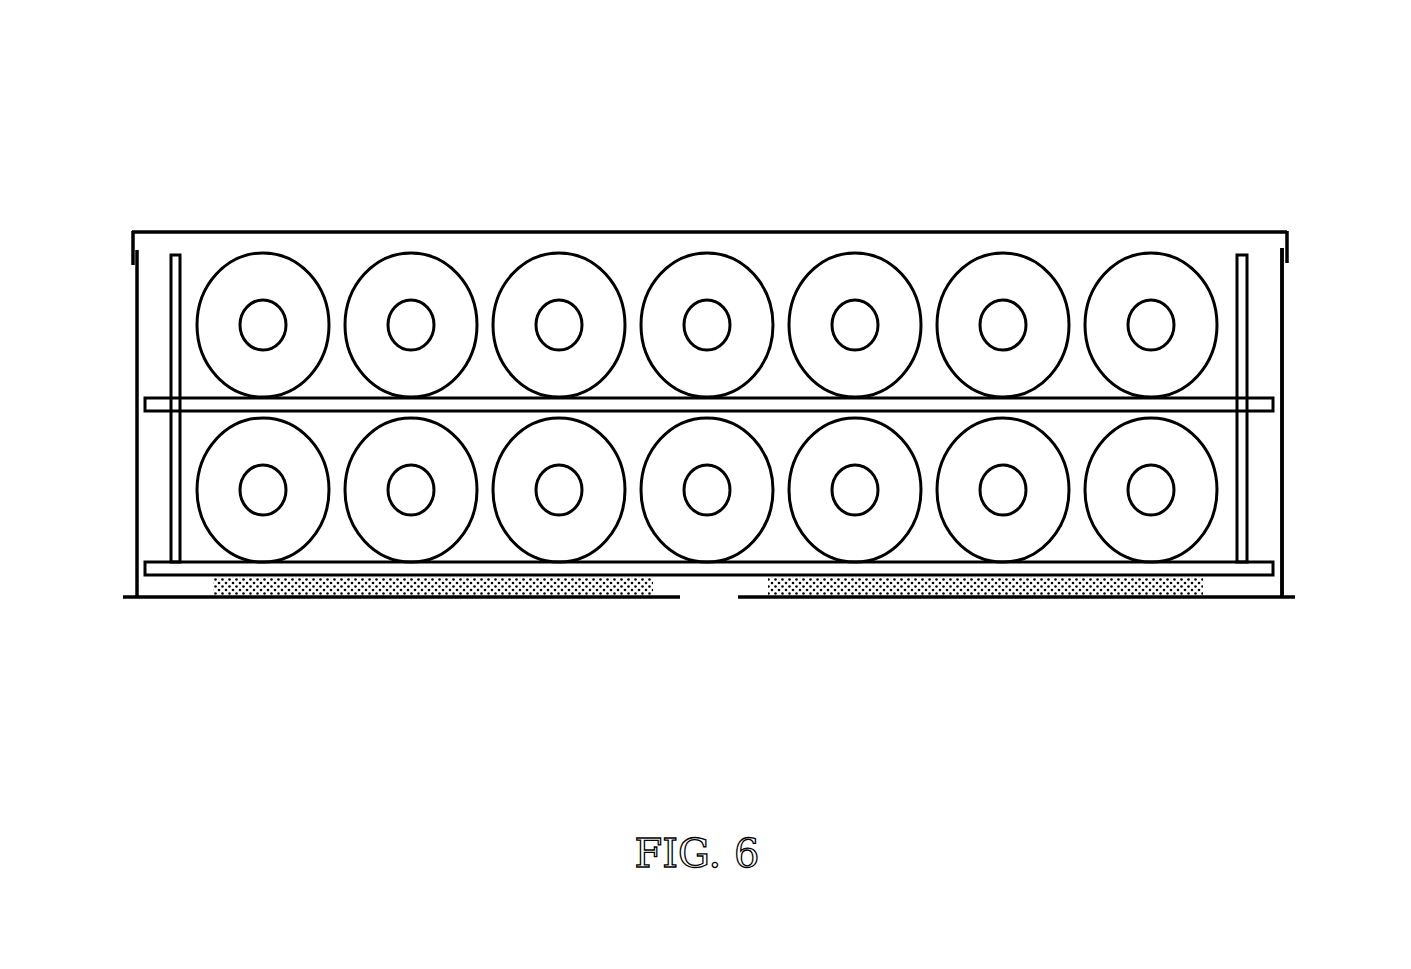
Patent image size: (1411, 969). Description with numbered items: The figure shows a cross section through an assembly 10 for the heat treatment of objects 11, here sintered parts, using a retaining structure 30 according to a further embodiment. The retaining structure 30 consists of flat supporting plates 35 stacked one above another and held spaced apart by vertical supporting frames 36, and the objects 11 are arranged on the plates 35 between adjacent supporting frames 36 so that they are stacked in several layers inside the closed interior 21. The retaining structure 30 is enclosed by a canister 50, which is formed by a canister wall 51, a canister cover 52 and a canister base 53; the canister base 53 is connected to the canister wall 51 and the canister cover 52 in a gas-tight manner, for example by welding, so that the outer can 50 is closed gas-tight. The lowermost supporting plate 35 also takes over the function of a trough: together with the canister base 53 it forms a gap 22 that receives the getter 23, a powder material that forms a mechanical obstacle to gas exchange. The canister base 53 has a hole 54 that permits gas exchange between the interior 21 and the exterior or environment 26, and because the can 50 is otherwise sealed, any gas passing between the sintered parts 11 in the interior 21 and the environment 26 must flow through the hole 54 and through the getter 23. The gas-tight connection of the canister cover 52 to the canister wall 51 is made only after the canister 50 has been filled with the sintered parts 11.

The assembly 10 is at (761, 395).
The object 11 is at (408, 273).
The interior 21 is at (621, 272).
The gap 22 is at (1240, 588).
The getter 23 is at (396, 585).
The environment 26 is at (813, 144).
The retaining structure 30 is at (772, 313).
The supporting plate 35 is at (1275, 401).
The supporting frame 36 is at (1247, 350).
The canister 50 is at (662, 186).
The canister wall 51 is at (1283, 293).
The canister cover 52 is at (997, 230).
The canister base 53 is at (1093, 597).
The hole 54 is at (708, 593).